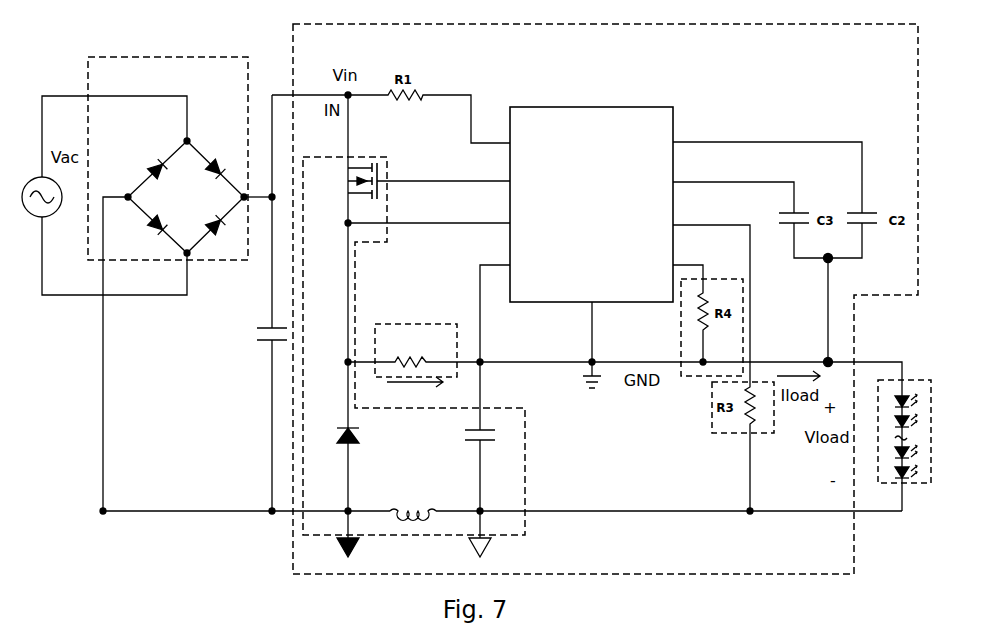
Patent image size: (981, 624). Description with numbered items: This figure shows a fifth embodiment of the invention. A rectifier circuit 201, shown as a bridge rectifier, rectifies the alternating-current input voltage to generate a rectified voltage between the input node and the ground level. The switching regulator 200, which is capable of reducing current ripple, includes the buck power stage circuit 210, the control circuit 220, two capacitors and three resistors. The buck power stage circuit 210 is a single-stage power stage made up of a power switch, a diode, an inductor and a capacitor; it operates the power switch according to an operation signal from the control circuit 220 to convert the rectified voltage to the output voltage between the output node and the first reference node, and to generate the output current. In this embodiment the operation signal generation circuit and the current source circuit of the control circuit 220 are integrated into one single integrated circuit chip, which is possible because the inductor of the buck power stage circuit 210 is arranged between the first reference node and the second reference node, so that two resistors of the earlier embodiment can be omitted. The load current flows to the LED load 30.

The switching regulator 200 is at (881, 53).
The rectifier circuit 201 is at (99, 86).
The buck power stage circuit 210 is at (489, 506).
The control circuit 220 is at (578, 144).
The LED load 30 is at (918, 380).